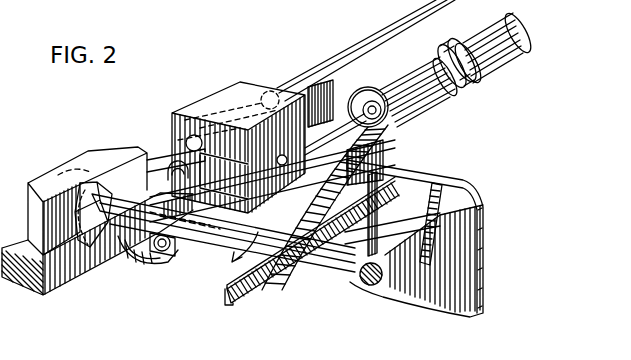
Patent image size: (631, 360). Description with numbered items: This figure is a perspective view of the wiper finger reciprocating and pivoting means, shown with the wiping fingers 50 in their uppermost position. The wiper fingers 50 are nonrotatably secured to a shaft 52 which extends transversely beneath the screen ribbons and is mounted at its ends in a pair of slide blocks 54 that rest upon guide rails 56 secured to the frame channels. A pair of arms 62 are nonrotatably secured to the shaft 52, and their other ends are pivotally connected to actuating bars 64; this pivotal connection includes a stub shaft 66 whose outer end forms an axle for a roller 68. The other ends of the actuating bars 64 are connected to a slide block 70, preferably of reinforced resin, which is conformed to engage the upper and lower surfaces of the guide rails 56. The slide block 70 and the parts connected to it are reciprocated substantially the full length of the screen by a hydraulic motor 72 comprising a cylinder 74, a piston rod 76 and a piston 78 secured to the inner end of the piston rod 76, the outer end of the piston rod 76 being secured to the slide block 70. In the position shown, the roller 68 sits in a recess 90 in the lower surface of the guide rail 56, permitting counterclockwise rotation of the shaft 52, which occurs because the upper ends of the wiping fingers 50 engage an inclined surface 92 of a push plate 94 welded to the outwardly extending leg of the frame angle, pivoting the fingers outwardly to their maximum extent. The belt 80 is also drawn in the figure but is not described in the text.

The wiper finger 50 is at (390, 152).
The shaft 52 is at (207, 240).
The slide block 54 is at (68, 172).
The guide rail 56 is at (34, 298).
The arm 62 is at (123, 263).
The actuating bar 64 is at (183, 163).
The stub shaft 66 is at (164, 252).
The roller 68 is at (143, 270).
The slide block 70 is at (209, 96).
The hydraulic motor 72 is at (497, 83).
The cylinder 74 is at (430, 104).
The piston rod 76 is at (352, 96).
The piston 78 is at (441, 58).
The belt 80 is at (346, 50).
The recess 90 is at (172, 163).
The inclined surface 92 is at (447, 207).
The push plate 94 is at (483, 223).